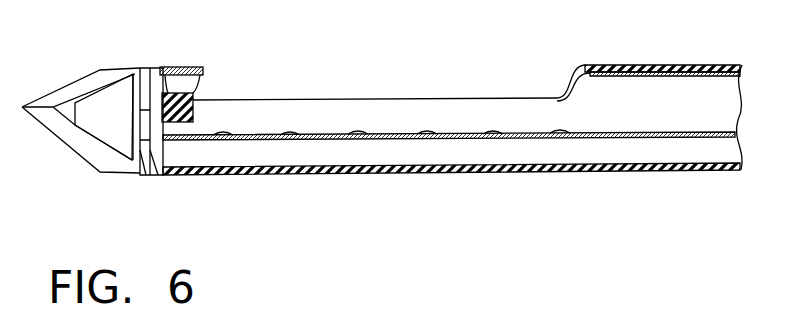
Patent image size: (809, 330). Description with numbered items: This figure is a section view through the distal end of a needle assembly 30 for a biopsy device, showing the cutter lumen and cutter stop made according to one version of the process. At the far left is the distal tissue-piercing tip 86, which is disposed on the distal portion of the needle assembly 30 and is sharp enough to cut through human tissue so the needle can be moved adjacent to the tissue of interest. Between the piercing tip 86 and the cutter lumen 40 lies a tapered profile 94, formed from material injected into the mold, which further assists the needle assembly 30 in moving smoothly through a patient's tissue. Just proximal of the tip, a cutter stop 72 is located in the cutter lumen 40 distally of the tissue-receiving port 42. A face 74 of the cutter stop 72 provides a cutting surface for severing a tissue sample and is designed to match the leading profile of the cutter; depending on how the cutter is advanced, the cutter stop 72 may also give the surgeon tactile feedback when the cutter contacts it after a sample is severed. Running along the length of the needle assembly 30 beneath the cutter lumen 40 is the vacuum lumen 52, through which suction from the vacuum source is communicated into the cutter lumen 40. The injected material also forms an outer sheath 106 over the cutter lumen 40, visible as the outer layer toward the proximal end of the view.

The needle assembly 30 is at (322, 215).
The cutter lumen 40 is at (642, 72).
The tissue-receiving port 42 is at (412, 98).
The vacuum lumen 52 is at (483, 172).
The cutter stop 72 is at (178, 100).
The face 74 is at (193, 110).
The distal tissue-piercing tip 86 is at (48, 93).
The tapered profile 94 is at (100, 107).
The outer sheath 106 is at (712, 63).